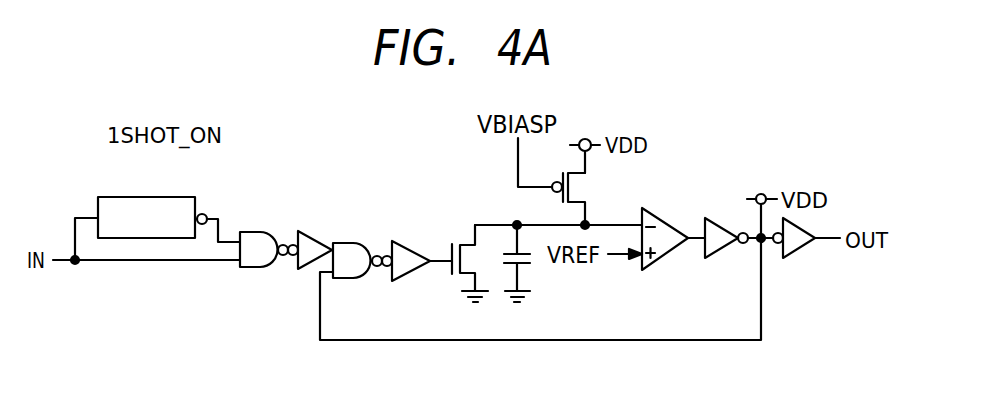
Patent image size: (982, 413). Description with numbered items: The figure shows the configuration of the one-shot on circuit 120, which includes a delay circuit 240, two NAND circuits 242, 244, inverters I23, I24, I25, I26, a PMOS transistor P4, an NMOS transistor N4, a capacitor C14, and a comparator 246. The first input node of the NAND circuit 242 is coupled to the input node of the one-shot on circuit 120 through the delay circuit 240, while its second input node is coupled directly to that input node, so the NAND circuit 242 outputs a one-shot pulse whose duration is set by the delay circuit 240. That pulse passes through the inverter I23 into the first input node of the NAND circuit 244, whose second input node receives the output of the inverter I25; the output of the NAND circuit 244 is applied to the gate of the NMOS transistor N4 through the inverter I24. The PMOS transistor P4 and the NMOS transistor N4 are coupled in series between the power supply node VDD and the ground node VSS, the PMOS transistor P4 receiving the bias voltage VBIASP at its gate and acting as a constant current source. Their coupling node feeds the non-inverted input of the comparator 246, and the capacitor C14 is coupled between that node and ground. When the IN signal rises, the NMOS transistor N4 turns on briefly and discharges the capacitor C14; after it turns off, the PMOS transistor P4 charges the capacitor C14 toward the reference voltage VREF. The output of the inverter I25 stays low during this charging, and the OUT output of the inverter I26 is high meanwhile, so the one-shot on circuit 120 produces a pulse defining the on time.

The one-shot on circuit 120 is at (395, 134).
The delay circuit 240 is at (198, 197).
The NAND circuit 242 is at (253, 267).
The inverter I23 is at (315, 231).
The NAND circuit 244 is at (347, 278).
The inverter I24 is at (420, 241).
The NMOS transistor N4 is at (451, 274).
The capacitor C14 is at (522, 265).
The PMOS transistor P4 is at (578, 188).
The comparator 246 is at (658, 259).
The inverter I25 is at (722, 258).
The inverter I26 is at (800, 258).